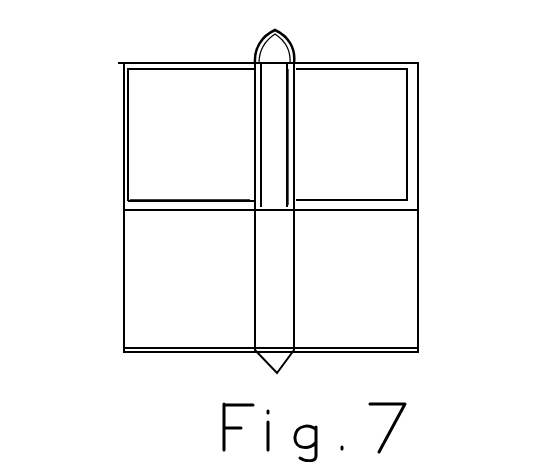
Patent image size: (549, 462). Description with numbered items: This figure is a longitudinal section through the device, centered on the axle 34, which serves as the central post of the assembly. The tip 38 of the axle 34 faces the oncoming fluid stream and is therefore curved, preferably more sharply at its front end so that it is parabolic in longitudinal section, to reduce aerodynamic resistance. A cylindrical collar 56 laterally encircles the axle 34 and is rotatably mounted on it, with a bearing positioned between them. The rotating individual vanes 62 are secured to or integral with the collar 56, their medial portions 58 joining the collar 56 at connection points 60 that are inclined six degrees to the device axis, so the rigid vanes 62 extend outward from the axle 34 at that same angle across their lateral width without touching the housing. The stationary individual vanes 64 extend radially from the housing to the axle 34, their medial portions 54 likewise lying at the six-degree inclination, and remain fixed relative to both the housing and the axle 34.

The axle 34 is at (297, 242).
The tip 38 is at (292, 48).
The medial portions 54 is at (245, 277).
The collar 56 is at (253, 101).
The medial portions 58 is at (247, 152).
The connection points 60 is at (298, 90).
The individual vanes 62 is at (371, 124).
The individual vanes 64 is at (372, 292).